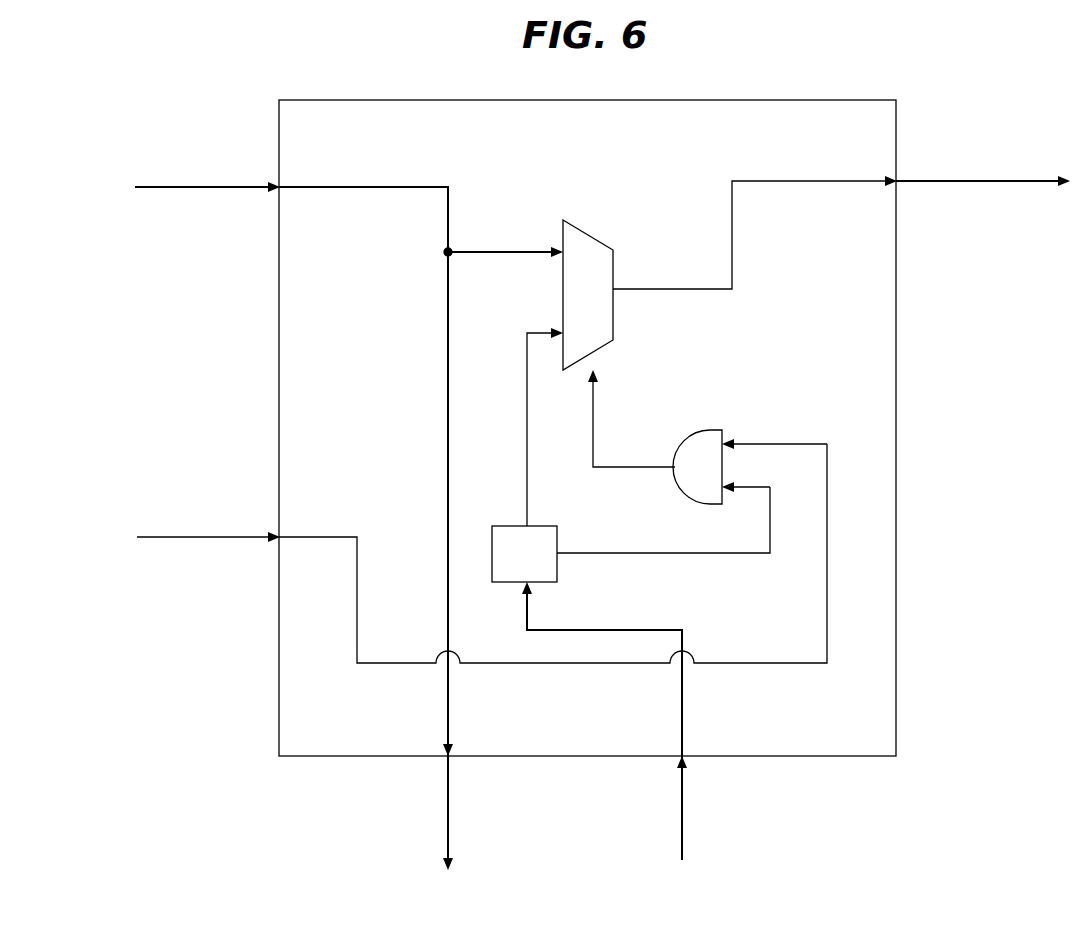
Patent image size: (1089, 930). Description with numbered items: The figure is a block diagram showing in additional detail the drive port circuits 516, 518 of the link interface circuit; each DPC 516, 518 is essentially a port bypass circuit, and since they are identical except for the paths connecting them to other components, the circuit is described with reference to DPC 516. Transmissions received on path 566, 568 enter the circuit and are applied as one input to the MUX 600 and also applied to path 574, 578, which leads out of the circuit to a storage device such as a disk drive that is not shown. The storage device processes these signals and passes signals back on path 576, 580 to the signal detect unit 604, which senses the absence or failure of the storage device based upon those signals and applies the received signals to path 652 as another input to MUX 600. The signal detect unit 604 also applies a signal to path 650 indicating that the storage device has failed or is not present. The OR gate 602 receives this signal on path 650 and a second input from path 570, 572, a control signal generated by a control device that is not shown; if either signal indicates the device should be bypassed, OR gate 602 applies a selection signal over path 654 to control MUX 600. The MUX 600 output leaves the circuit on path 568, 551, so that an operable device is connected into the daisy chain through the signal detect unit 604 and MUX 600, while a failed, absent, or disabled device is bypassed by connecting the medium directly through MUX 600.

The drive port circuit 516 is at (587, 387).
The drive port circuit 518 is at (833, 100).
The path 566 is at (349, 383).
The path 568 is at (192, 186).
The output data path 551 is at (990, 185).
The path 570 is at (482, 553).
The input control path 572 is at (207, 540).
The path 574 is at (375, 766).
The output path 578 is at (446, 800).
The path 576 is at (680, 721).
The input signal path 580 is at (684, 803).
The MUX 600 is at (597, 234).
The OR gate 602 is at (714, 430).
The signal detect unit 604 is at (557, 567).
The path 650 is at (735, 556).
The path 652 is at (526, 450).
The multiplexer select signal 654 is at (594, 387).